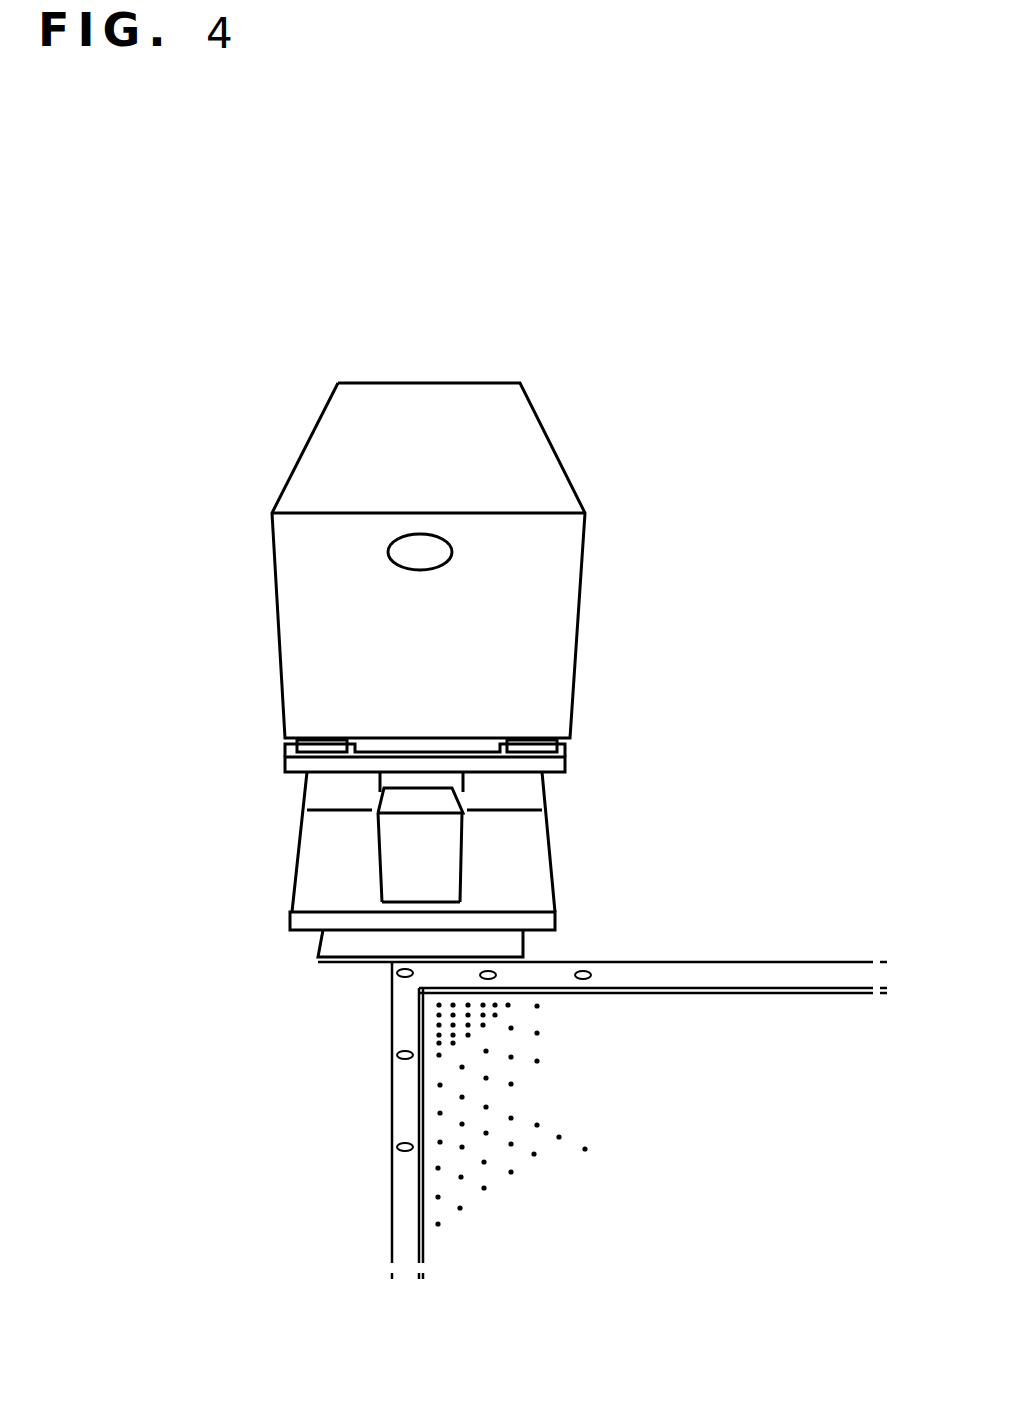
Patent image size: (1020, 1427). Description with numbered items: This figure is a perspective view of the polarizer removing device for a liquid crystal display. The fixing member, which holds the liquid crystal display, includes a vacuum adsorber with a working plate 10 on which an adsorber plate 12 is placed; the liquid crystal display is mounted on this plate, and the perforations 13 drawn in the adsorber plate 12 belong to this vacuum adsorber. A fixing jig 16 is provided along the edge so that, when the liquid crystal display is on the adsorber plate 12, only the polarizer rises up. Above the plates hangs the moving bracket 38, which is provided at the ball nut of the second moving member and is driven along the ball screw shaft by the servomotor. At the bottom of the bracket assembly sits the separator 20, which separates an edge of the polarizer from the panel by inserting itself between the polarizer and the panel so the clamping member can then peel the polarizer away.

The moving bracket 38 is at (481, 560).
The separator 20 is at (483, 942).
The working plate 10 is at (582, 1120).
The fixing jig 16 is at (587, 1014).
The adsorber plate 12 is at (653, 1079).
The holes 13 is at (448, 1121).